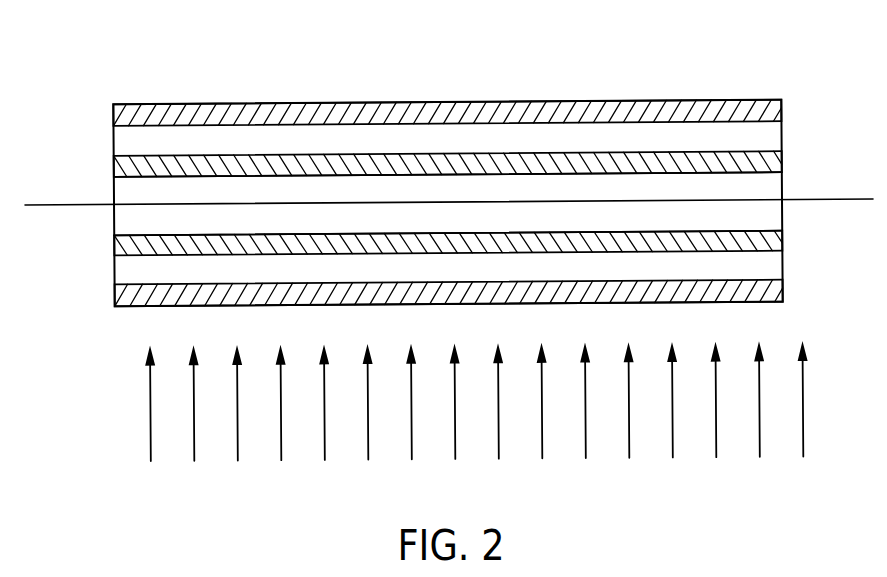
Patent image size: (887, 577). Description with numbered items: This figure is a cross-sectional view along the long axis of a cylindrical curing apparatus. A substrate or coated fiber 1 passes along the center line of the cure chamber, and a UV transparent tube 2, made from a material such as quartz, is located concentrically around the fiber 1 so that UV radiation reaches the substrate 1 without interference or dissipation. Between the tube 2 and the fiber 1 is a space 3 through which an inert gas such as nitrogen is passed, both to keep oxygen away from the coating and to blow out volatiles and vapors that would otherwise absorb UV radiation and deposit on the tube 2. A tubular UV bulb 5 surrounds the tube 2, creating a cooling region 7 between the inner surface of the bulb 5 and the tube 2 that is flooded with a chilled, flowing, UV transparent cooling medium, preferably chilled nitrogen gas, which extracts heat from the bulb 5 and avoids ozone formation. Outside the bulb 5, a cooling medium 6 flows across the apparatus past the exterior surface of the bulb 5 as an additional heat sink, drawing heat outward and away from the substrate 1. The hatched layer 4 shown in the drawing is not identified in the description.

The substrate or coated fiber 1 is at (50, 204).
The UV transparent tube 2 is at (113, 242).
The space 3 is at (393, 183).
The outer layer 4 is at (165, 105).
The tubular UV bulb 5 is at (293, 104).
The cooling medium 6 is at (148, 433).
The cooling region 7 is at (559, 132).